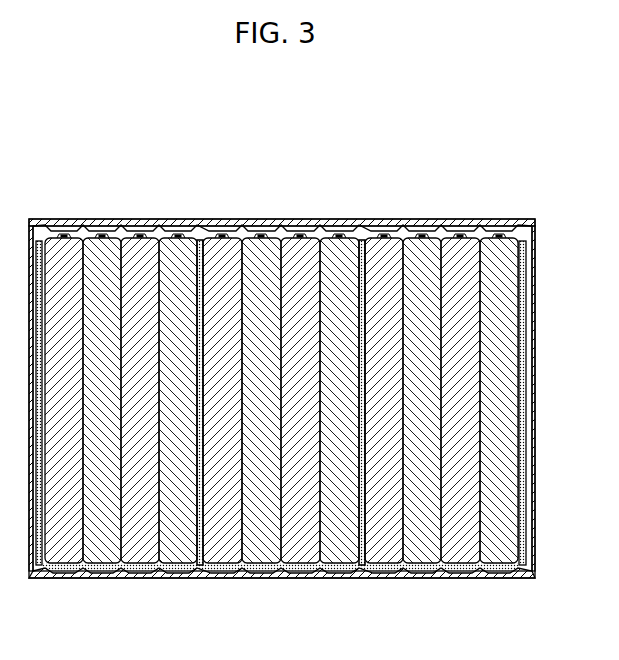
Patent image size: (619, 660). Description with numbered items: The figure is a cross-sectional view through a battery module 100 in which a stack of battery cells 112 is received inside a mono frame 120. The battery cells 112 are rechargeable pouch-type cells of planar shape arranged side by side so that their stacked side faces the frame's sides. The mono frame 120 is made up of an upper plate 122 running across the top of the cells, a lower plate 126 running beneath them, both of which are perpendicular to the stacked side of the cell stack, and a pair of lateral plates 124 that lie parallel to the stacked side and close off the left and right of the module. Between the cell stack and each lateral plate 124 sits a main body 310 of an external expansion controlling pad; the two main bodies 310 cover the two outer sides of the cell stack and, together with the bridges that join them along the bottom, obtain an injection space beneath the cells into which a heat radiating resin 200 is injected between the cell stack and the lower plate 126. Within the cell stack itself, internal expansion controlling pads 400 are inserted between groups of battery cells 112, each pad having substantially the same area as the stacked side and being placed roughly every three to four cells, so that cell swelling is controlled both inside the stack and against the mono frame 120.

The battery module 100 is at (262, 119).
The battery cell 112 is at (147, 246).
The mono frame 120 is at (466, 203).
The upper plate 122 is at (404, 228).
The lateral plate 124 is at (534, 393).
The lower plate 126 is at (403, 573).
The heat radiating resin 200 is at (97, 572).
The main body 310 is at (39, 240).
The internal expansion controlling pad 400 is at (200, 240).